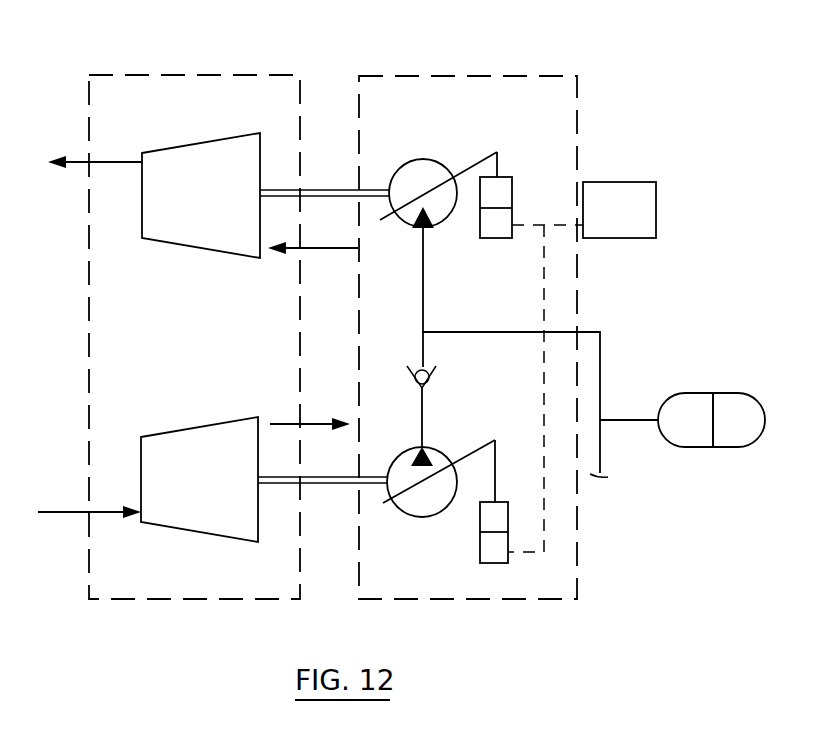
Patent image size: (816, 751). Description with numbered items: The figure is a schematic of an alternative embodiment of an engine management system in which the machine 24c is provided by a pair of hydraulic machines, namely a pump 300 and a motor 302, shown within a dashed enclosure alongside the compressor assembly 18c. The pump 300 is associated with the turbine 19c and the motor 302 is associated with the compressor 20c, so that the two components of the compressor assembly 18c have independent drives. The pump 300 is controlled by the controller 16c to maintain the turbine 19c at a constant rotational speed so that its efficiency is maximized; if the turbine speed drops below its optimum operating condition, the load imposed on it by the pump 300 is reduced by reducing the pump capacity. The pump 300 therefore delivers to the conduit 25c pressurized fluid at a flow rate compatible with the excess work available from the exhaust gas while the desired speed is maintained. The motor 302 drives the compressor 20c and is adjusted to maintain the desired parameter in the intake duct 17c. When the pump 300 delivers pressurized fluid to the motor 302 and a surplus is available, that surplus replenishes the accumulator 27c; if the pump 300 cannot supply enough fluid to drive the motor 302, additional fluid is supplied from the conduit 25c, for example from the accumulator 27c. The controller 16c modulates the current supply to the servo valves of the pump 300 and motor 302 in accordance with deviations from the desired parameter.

The controller 16c is at (582, 367).
The intake duct 17c is at (89, 147).
The compressor assembly 18c is at (140, 90).
The turbine 19c is at (212, 479).
The compressor 20c is at (265, 195).
The machine 24c is at (562, 98).
The conduit 25c is at (487, 332).
The accumulator 27c is at (698, 432).
The pump 300 is at (448, 448).
The motor 302 is at (413, 170).